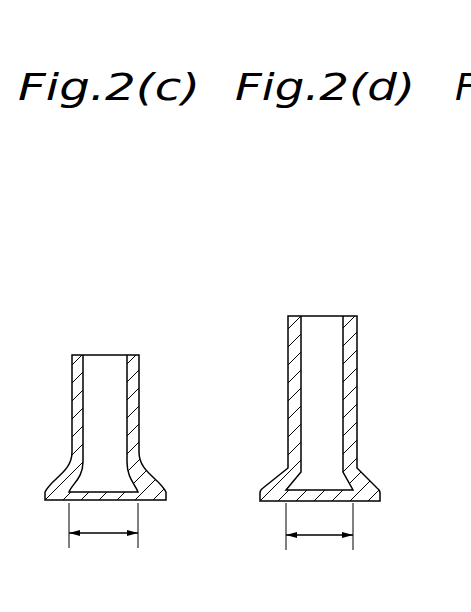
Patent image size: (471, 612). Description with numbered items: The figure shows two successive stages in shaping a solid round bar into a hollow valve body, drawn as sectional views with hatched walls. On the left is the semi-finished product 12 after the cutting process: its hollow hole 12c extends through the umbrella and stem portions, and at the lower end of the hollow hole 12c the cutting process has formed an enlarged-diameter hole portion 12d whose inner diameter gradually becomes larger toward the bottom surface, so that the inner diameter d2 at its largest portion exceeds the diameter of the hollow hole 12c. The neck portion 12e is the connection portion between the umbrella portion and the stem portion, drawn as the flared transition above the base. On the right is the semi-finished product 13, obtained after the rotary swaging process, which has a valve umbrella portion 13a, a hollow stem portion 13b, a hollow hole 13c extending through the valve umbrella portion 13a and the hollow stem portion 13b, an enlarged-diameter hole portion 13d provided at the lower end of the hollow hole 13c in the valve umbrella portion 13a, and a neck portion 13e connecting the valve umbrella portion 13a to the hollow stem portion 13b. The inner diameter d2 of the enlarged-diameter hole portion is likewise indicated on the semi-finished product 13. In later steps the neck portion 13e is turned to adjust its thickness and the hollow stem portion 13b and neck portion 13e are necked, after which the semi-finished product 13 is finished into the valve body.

In FIG. 2C, the semi-finished product 12 is at (111, 344).
In FIG. 2C, the hollow hole 12c is at (130, 388).
In FIG. 2C, the enlarged-diameter hole portion 12d is at (133, 481).
In FIG. 2C, the neck portion 12e is at (36, 472).
In FIG. 2D, the semi-finished product 13 is at (331, 307).
In FIG. 2D, the valve umbrella portion 13a is at (268, 482).
In FIG. 2D, the hollow stem portion 13b is at (287, 364).
In FIG. 2D, the hollow hole 13c is at (346, 385).
In FIG. 2D, the enlarged-diameter hole portion 13d is at (364, 476).
In FIG. 2D, the neck portion 13e is at (350, 476).
In FIG. 2C, the inner diameter of the enlarged-diameter hole portion d2 is at (103, 525).
In FIG. 2D, the inner diameter of the enlarged-diameter hole portion d2 is at (319, 526).